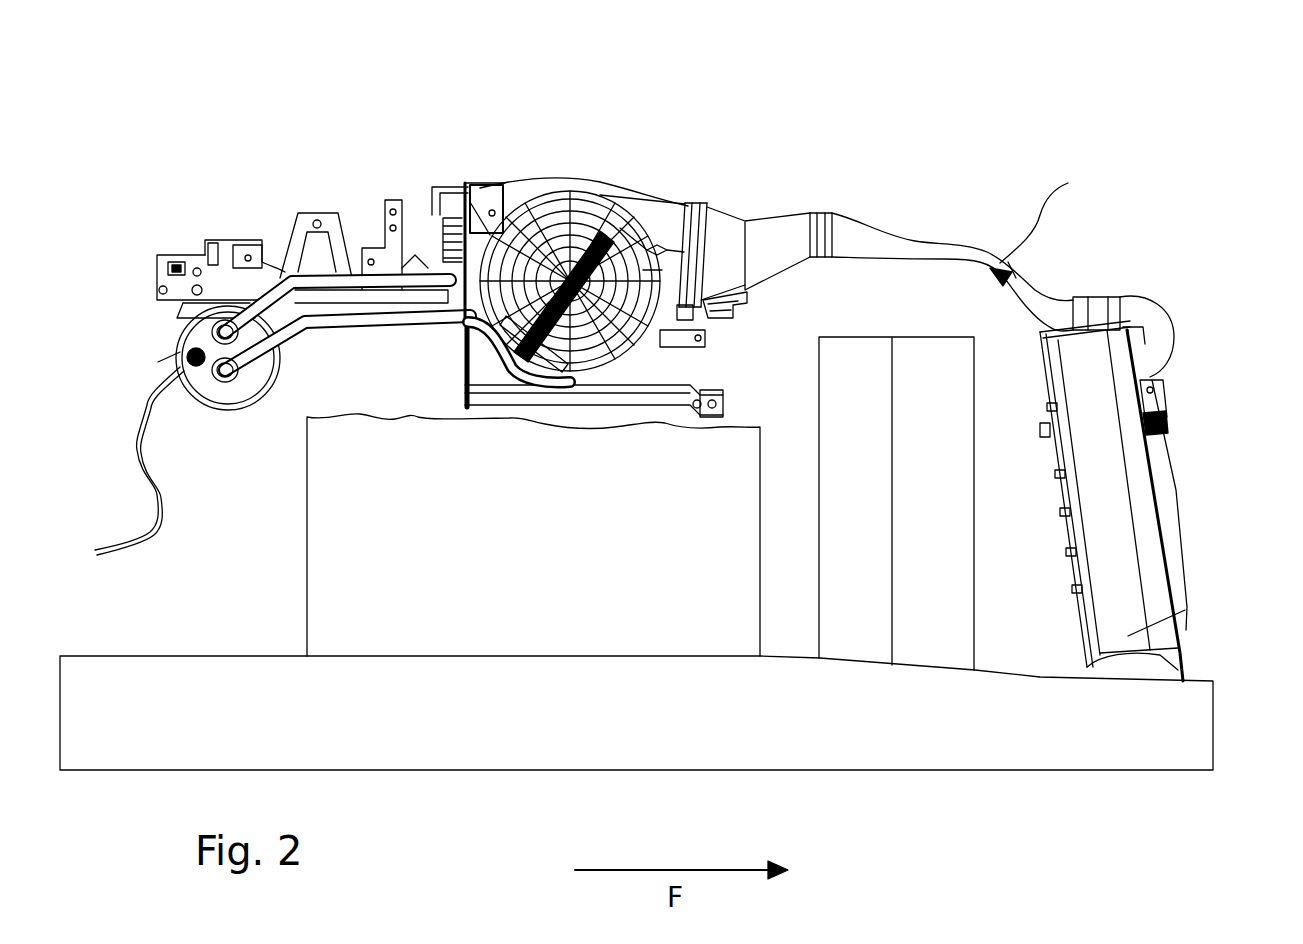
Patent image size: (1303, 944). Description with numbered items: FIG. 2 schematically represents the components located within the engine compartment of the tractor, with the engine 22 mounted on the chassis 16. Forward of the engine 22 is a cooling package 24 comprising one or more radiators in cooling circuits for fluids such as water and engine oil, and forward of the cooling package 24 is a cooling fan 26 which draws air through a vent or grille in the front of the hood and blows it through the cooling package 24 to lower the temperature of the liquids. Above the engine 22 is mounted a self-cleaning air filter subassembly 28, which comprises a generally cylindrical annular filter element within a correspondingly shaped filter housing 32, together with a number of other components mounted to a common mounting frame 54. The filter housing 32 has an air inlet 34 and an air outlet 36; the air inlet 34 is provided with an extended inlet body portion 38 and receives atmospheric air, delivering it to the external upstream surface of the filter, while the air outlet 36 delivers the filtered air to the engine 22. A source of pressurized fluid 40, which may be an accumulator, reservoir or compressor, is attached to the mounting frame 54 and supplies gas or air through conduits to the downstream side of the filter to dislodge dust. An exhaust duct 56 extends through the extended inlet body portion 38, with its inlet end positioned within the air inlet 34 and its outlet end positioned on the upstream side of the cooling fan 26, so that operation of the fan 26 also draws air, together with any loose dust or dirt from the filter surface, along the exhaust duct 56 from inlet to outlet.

The chassis 16 is at (1040, 740).
The engine 22 is at (437, 617).
The cooling package 24 is at (862, 600).
The cooling fan 26 is at (1115, 520).
The self-cleaning air filter subassembly 28 is at (661, 128).
The filter housing 32 is at (572, 187).
The air inlet 34 is at (662, 212).
The air outlet 36 is at (458, 190).
The extended inlet body portion 38 is at (777, 240).
The source of pressurized fluid 40 is at (222, 407).
The mounting frame 54 is at (226, 278).
The exhaust duct 56 is at (1051, 224).